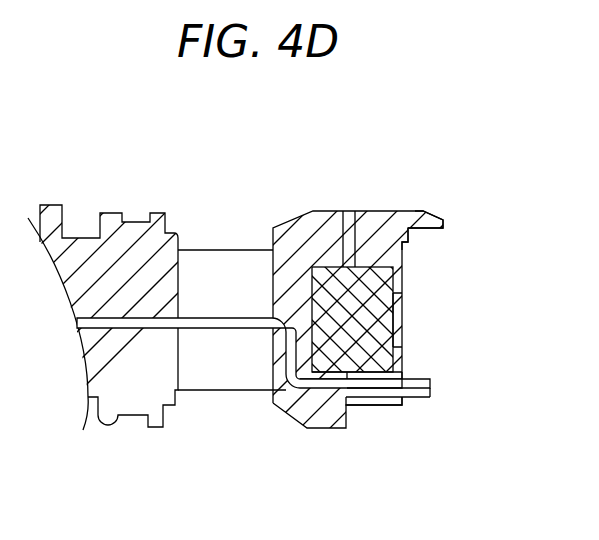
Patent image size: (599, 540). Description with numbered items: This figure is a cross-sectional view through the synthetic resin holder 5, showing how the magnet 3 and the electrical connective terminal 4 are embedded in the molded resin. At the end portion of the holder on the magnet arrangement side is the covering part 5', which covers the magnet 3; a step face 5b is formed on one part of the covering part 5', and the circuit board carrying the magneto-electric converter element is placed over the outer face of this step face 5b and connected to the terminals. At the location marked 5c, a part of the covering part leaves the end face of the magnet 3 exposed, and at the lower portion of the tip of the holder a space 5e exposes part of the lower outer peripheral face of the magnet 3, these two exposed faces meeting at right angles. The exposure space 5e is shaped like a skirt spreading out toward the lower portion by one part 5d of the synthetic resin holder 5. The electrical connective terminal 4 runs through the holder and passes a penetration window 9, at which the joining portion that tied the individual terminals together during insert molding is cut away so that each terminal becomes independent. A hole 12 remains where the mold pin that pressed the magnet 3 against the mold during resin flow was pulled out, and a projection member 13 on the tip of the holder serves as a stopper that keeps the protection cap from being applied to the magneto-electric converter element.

The magnet 3 is at (322, 248).
The electrical connective terminal 4 is at (290, 418).
The synthetic resin holder 5 is at (140, 287).
The covering part 5' is at (356, 320).
The step face 5b is at (408, 236).
The exposure portion of the magnet end face 5c is at (405, 322).
The one part of the synthetic resin holder 5d is at (395, 380).
The space 5e is at (353, 417).
The penetration window 9 is at (220, 268).
The hole 12 is at (350, 222).
The projection member 13 is at (428, 214).